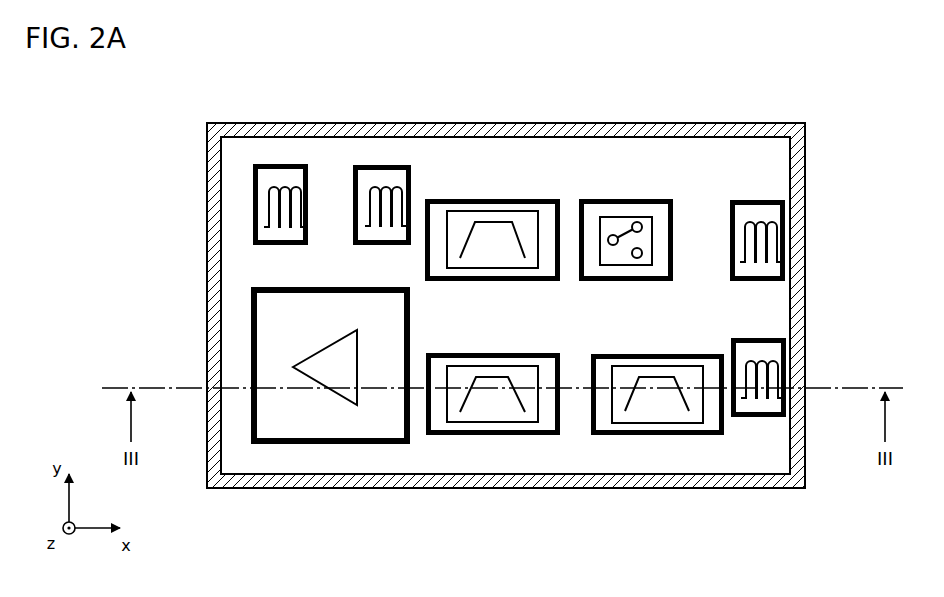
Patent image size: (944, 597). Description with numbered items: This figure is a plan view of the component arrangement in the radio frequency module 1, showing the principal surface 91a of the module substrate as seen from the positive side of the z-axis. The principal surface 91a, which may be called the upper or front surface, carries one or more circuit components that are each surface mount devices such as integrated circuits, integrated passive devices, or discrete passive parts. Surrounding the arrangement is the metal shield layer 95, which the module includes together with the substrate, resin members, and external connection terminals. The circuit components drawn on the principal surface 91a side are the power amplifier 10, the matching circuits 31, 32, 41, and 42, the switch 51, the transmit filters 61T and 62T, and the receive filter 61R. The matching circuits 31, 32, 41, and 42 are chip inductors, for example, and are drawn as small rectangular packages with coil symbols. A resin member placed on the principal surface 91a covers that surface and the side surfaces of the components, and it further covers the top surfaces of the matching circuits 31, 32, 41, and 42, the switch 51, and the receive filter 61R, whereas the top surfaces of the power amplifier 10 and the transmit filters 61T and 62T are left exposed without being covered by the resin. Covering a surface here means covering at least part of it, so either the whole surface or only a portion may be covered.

The radio frequency module 1 is at (862, 121).
The metal shield layer 95 is at (642, 123).
The matching circuit 31 is at (284, 164).
The matching circuit 32 is at (372, 165).
The power amplifier 10 is at (337, 287).
The transmit filter 62T is at (525, 199).
The switch 51 is at (625, 199).
The matching circuit 42 is at (742, 200).
The principal surface 91a is at (441, 331).
The transmit filter 61T is at (540, 353).
The receive filter 61R is at (675, 354).
The matching circuit 41 is at (745, 338).